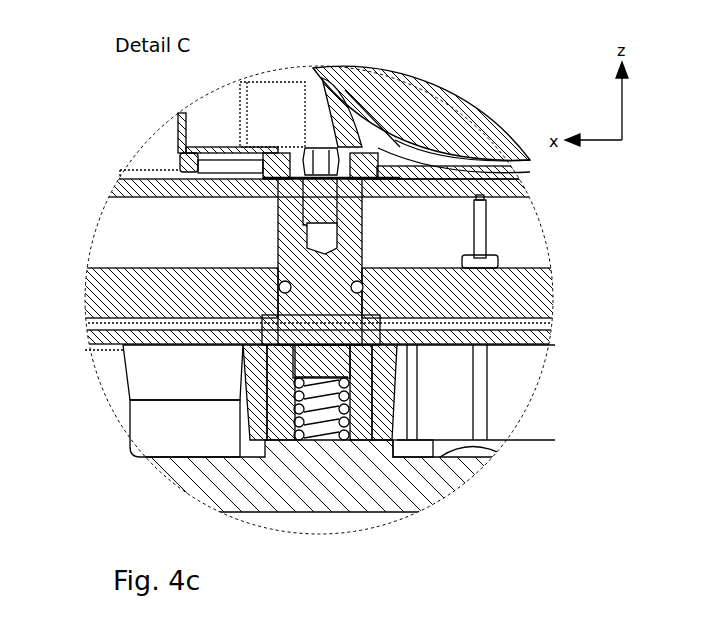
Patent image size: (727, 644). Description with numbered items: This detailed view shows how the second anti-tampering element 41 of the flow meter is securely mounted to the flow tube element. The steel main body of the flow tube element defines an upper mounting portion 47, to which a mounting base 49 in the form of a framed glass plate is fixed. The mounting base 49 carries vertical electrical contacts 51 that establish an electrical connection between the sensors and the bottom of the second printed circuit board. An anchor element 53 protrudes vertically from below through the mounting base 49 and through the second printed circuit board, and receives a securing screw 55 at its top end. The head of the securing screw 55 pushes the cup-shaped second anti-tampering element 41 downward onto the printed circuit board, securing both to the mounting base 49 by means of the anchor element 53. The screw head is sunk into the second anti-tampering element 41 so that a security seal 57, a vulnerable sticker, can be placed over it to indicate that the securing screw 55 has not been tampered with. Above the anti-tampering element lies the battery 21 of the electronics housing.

The battery 21 is at (440, 113).
The second anti-tampering element 41 is at (272, 160).
The upper mounting portion 47 is at (342, 458).
The mounting base 49 is at (525, 293).
The electrical contacts 51 is at (482, 228).
The anchor element 53 is at (292, 243).
The securing screw 55 is at (322, 185).
The security seal 57 is at (340, 146).